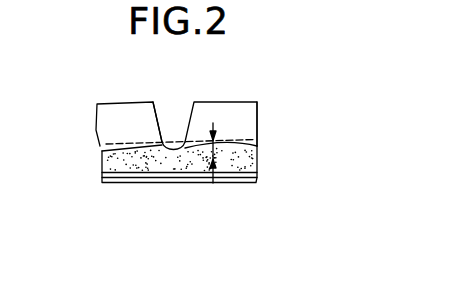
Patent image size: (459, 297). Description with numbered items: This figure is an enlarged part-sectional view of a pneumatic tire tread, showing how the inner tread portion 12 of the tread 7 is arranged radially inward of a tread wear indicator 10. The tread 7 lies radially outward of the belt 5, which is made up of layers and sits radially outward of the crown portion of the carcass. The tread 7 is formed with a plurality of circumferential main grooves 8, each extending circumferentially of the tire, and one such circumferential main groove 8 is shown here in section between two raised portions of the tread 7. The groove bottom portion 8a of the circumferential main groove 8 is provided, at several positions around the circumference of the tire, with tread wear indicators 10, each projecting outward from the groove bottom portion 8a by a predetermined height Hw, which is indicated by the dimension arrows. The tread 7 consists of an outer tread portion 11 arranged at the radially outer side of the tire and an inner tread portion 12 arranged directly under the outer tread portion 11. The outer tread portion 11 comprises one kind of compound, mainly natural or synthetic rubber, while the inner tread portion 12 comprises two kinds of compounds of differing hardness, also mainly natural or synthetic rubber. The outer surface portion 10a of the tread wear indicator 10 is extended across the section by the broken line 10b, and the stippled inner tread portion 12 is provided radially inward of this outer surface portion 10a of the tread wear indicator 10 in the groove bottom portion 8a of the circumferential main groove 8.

The belt 5 is at (192, 181).
The tread 7 is at (231, 99).
The circumferential main groove 8 is at (156, 103).
The groove bottom portion 8a is at (163, 178).
The tread wear indicator 10 is at (180, 140).
The outer surface portion 10a is at (165, 140).
The broken line 10b is at (100, 145).
The outer tread portion 11 is at (259, 110).
The inner tread portion 12 is at (259, 167).
The predetermined height Hw is at (217, 144).